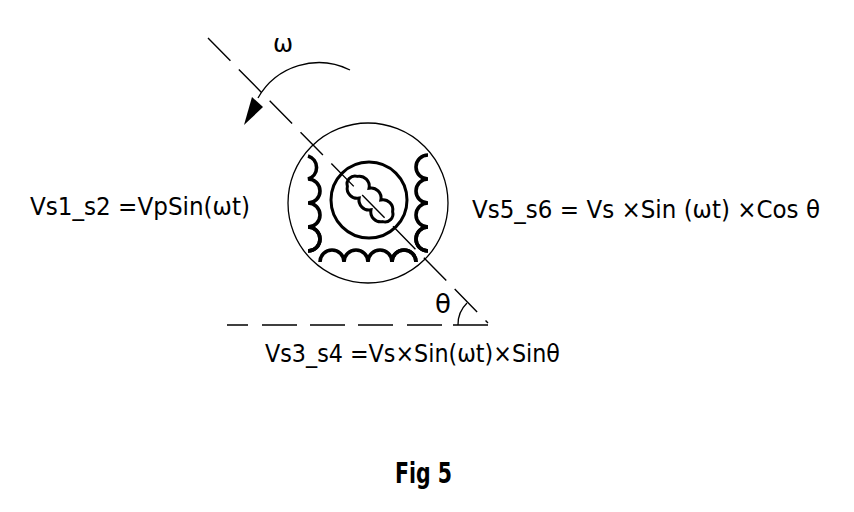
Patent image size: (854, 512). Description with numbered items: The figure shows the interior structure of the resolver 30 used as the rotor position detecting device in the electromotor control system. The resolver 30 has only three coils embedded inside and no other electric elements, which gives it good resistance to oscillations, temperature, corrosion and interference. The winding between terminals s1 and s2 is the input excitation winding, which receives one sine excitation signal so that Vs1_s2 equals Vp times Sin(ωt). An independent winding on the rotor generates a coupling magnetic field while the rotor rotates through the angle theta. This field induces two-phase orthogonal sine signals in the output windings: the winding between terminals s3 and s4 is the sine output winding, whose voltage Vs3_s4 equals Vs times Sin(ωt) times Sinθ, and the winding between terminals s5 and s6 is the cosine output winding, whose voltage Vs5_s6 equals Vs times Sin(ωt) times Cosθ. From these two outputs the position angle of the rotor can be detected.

The resolver 30 is at (430, 110).
The input excitation winding terminal s1 is at (308, 156).
The input excitation winding terminal s2 is at (308, 251).
The sine output winding terminal s3 is at (320, 262).
The sine output winding terminal s4 is at (416, 262).
The cosine output winding terminal s5 is at (428, 251).
The cosine output winding terminal s6 is at (428, 155).